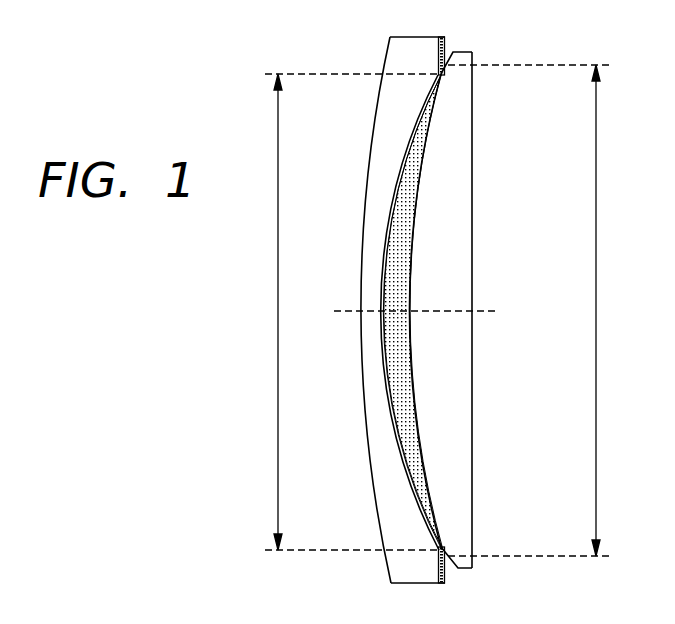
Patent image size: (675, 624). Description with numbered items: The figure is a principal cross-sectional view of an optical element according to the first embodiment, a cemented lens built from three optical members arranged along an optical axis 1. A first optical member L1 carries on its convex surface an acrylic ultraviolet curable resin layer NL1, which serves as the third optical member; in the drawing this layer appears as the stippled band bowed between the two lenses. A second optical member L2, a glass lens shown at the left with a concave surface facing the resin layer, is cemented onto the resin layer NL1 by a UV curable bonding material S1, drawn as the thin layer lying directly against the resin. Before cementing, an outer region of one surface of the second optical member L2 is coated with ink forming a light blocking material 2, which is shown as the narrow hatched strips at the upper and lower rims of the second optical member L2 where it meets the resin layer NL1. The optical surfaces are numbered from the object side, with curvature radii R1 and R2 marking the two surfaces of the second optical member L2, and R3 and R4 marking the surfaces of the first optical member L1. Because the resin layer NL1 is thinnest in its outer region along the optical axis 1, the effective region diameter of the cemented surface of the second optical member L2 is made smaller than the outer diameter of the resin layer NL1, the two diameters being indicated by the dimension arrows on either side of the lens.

The optical axis 1 is at (434, 311).
The light blocking material (light blocking member) 2 is at (445, 50).
The first optical member L1 is at (476, 310).
The second optical member L2 is at (375, 310).
The resin layer NL1 is at (415, 188).
The UV curable bonding material S1 is at (425, 148).
The curvature radius of first optical surface R1 is at (367, 467).
The curvature radius of second optical surface R2 is at (410, 470).
The curvature radius of third optical surface R3 is at (428, 480).
The curvature radius of fourth optical surface R4 is at (473, 513).